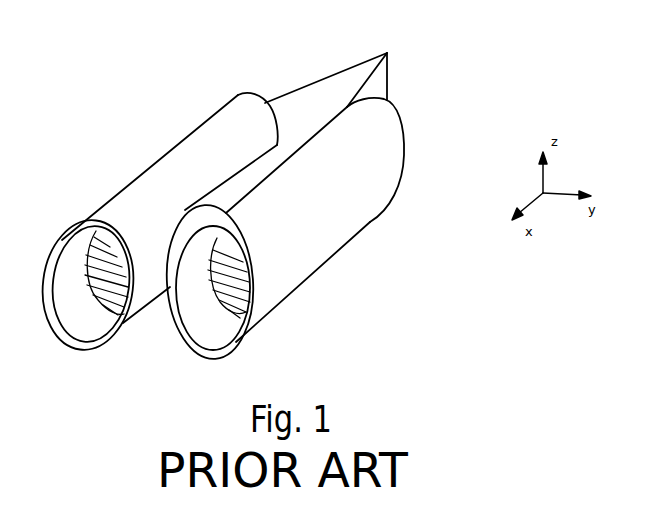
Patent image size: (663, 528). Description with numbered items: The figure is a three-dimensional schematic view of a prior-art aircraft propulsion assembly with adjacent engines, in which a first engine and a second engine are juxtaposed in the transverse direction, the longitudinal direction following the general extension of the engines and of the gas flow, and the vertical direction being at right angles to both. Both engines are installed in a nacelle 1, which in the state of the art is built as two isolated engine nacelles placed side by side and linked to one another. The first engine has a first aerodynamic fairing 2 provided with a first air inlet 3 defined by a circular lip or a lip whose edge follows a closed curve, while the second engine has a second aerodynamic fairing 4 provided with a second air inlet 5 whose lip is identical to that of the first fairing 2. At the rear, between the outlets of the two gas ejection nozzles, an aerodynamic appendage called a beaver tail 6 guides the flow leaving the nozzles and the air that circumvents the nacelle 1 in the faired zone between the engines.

The nacelle 1 is at (314, 268).
The first aerodynamic fairing 2 is at (370, 224).
The first air inlet 3 is at (192, 333).
The second aerodynamic fairing 4 is at (122, 191).
The second air inlet 5 is at (67, 316).
The beaver tail 6 is at (360, 62).